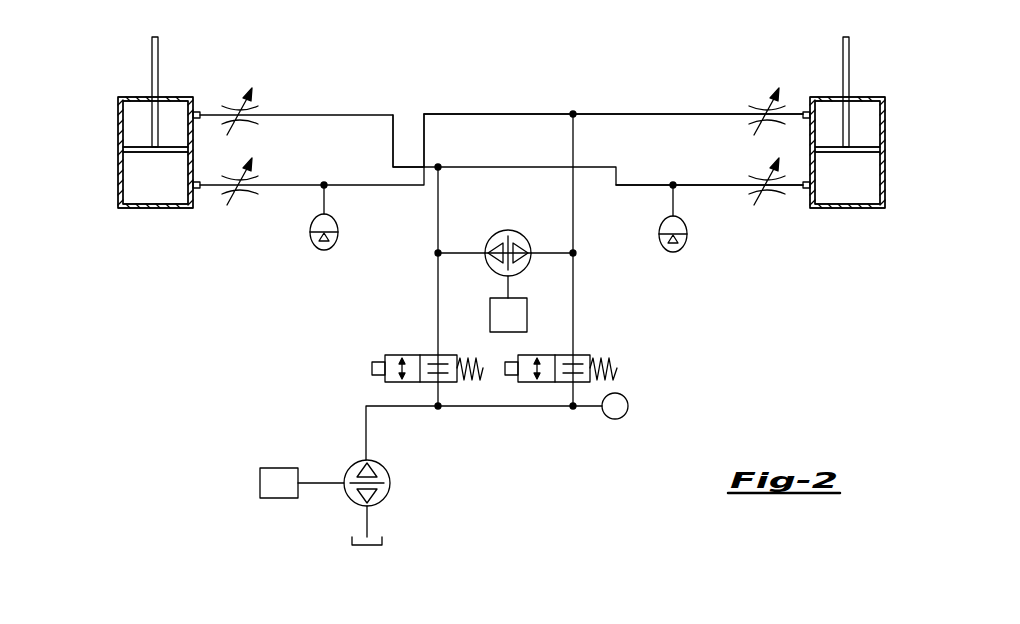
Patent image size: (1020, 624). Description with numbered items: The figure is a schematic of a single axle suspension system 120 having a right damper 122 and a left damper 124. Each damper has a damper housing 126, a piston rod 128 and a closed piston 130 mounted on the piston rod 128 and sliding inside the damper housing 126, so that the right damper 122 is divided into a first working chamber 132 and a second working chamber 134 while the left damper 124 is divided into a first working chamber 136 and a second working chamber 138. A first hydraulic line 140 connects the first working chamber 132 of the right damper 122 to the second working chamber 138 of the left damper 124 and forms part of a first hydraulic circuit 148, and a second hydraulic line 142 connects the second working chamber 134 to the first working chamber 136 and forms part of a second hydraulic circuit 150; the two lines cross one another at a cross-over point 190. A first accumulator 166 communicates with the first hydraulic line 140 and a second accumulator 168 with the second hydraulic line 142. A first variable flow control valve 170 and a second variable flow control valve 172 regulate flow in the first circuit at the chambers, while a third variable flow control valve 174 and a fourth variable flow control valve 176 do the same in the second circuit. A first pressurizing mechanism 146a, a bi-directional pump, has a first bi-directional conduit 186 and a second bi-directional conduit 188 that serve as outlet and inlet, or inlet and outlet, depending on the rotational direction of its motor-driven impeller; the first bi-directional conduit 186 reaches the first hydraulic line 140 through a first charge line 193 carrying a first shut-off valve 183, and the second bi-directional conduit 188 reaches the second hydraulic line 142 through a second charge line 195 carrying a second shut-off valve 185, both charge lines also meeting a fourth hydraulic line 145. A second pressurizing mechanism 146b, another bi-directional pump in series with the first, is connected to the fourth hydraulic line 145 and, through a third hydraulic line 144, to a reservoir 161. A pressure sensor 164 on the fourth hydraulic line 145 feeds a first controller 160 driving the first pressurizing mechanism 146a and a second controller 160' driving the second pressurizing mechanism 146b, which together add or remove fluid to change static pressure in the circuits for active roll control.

The single axle suspension system 120 is at (294, 330).
The right damper 122 is at (895, 85).
The left damper 124 is at (110, 78).
The damper housing 126 is at (118, 168).
The piston rod 128 is at (152, 42).
The piston 130 is at (135, 148).
The first working chamber of the right damper 132 is at (828, 113).
The second working chamber of the right damper 134 is at (863, 190).
The first working chamber of the left damper 136 is at (182, 113).
The second working chamber of the left damper 138 is at (147, 188).
The first hydraulic line 140 is at (698, 112).
The second hydraulic line 142 is at (735, 183).
The third hydraulic line 144 is at (368, 520).
The fourth hydraulic line 145 is at (402, 406).
The first pressurizing mechanism 146a is at (508, 230).
The second pressurizing mechanism 146b is at (390, 483).
The first hydraulic circuit 148 is at (606, 100).
The second hydraulic circuit 150 is at (641, 175).
The first controller 160 is at (457, 304).
The second controller 160' is at (269, 486).
The reservoir 161 is at (338, 553).
The pressure sensor 164 is at (628, 406).
The first accumulator 166 is at (310, 245).
The second accumulator 168 is at (684, 247).
The first variable flow control valve 170 is at (760, 110).
The second variable flow control valve 172 is at (238, 197).
The third variable flow control valve 174 is at (775, 197).
The fourth variable flow control valve 176 is at (230, 110).
The first shut-off valve 183 is at (583, 355).
The second shut-off valve 185 is at (392, 355).
The first bi-directional conduit 186 is at (553, 253).
The second bi-directional conduit 188 is at (457, 253).
The cross-over point 190 is at (413, 155).
The first charge line 193 is at (573, 200).
The second charge line 195 is at (438, 208).